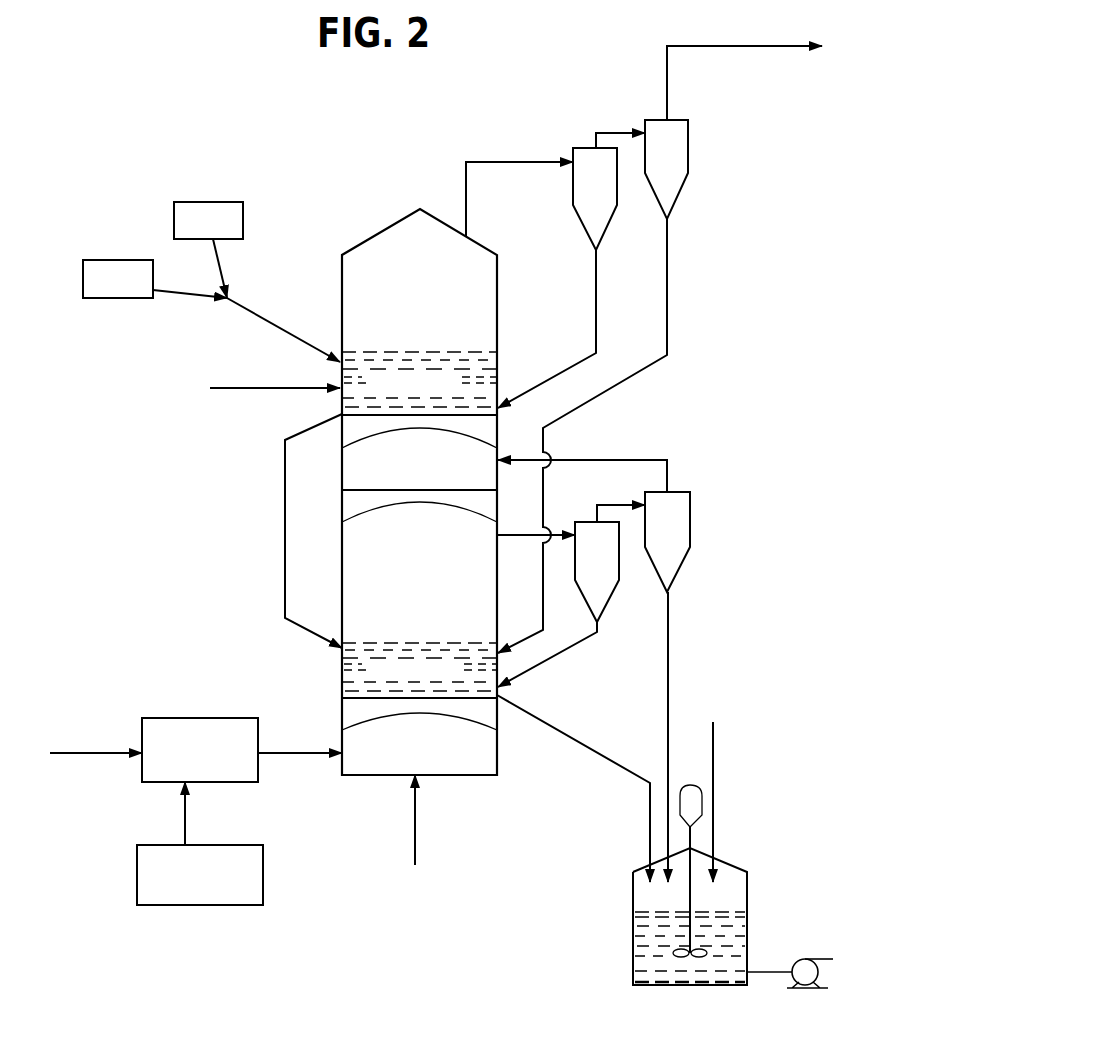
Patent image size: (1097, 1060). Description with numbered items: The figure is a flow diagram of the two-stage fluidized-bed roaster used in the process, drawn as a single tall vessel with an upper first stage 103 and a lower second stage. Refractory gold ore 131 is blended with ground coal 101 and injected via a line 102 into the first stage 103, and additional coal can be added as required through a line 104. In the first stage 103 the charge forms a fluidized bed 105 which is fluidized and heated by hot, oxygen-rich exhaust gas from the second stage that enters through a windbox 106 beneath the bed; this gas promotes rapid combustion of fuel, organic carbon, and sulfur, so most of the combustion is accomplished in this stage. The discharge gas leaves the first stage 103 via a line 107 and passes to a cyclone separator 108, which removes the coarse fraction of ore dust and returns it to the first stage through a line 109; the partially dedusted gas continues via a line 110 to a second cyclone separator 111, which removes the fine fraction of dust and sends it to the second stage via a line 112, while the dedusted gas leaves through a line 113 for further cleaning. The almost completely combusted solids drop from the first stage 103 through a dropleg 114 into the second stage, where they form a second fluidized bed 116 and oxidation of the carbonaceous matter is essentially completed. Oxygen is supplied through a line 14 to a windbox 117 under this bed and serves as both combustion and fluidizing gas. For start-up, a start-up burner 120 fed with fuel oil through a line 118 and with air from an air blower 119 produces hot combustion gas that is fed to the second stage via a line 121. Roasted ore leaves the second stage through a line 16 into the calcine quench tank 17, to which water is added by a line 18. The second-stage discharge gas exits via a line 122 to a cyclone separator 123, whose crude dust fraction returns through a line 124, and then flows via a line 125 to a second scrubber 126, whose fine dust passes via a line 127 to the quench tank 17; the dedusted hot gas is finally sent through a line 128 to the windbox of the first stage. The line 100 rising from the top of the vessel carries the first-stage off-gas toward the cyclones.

The oxygen supply line 14 is at (415, 835).
The roasted ore discharge line 16 is at (618, 764).
The calcine quench tank 17 is at (735, 955).
The water line 18 is at (713, 783).
The off-gas outlet line 100 is at (420, 202).
The ground coal 101 is at (135, 260).
The feed line 102 is at (292, 335).
The first stage 103 is at (380, 230).
The coal line 104 is at (283, 390).
The first stage fluidized bed 105 is at (426, 360).
The windbox 106 is at (498, 446).
The first stage discharge gas line 107 is at (547, 158).
The cyclone separator 108 is at (586, 203).
The coarse dust return line 109 is at (596, 310).
The partially dedusted gas line 110 is at (627, 128).
The second cyclone separator 111 is at (680, 151).
The fine dust transfer line 112 is at (668, 330).
The dusted gas line 113 is at (783, 46).
The dropleg 114 is at (285, 491).
The second stage fluidized bed 116 is at (438, 650).
The second stage windbox 117 is at (483, 757).
The fuel oil line 118 is at (110, 752).
The air blower 119 is at (212, 853).
The start-up burner 120 is at (245, 718).
The burner gas line 121 is at (328, 753).
The second stage discharge gas line 122 is at (518, 533).
The cyclone separator 123 is at (608, 563).
The crude dust return line 124 is at (568, 650).
The partially scrubbed gas line 125 is at (615, 503).
The second scrubber 126 is at (683, 532).
The fine dust line 127 is at (672, 663).
The hot exhaust gas line 128 is at (595, 460).
The refractory gold ore 131 is at (223, 202).